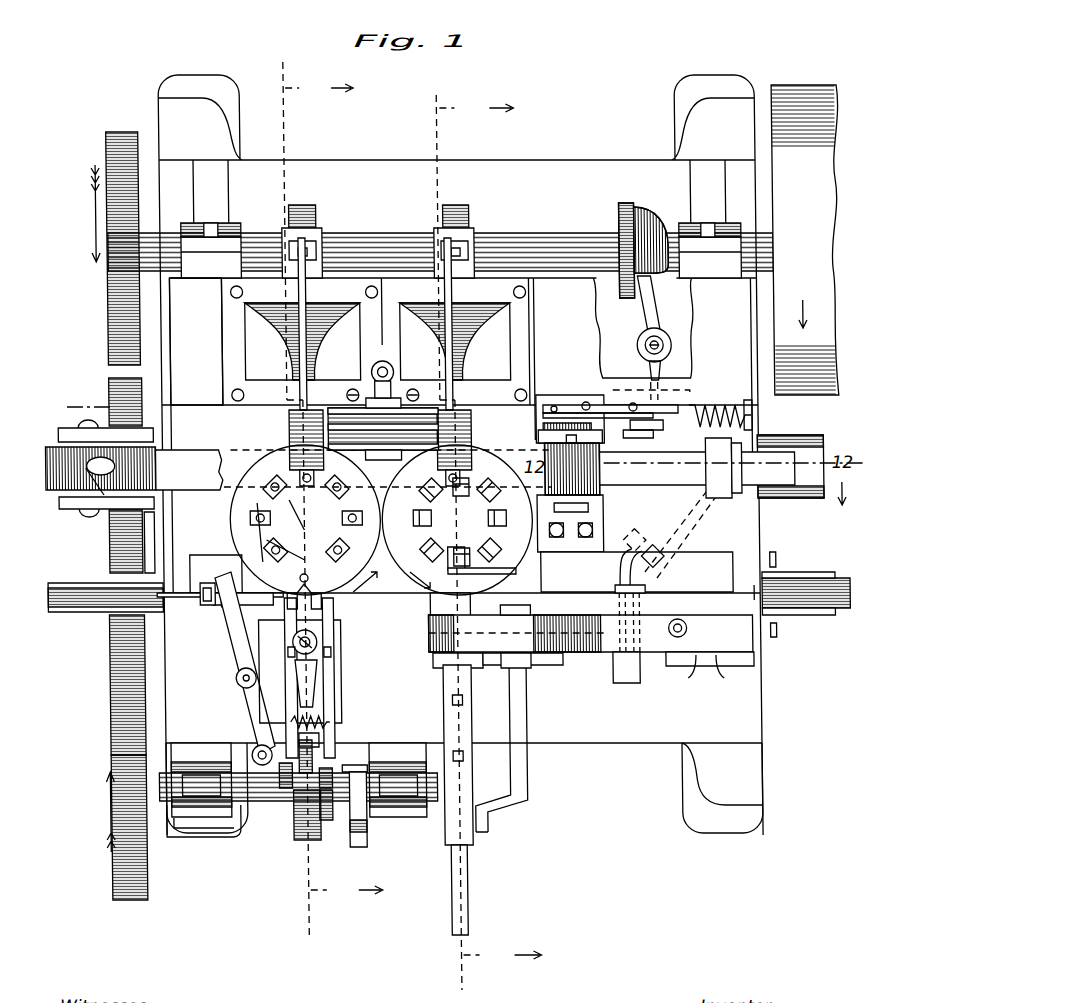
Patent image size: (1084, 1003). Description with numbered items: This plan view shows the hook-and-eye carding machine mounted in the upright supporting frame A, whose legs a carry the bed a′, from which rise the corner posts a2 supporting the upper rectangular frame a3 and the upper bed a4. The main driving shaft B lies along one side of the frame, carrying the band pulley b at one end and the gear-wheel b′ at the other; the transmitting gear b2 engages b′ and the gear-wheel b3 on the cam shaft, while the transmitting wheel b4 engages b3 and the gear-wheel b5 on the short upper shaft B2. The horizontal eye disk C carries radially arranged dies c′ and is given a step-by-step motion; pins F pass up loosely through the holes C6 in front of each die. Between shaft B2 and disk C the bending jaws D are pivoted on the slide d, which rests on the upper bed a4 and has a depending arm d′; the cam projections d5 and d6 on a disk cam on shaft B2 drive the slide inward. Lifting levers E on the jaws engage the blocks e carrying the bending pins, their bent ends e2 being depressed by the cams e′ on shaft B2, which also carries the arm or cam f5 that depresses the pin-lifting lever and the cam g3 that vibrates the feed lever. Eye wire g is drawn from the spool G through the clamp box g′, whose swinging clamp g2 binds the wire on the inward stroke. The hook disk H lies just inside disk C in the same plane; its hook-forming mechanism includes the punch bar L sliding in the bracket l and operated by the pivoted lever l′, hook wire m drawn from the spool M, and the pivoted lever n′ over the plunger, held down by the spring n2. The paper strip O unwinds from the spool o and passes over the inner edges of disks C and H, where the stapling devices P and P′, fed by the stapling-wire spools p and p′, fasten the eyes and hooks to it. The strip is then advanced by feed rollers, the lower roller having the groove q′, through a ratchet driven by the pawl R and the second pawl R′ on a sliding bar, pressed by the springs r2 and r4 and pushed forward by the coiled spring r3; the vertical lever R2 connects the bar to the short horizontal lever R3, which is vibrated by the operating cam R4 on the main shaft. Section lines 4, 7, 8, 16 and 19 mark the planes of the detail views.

The supporting frame A is at (605, 158).
The legs a is at (240, 848).
The bed a′ is at (462, 436).
The corner posts a2 is at (222, 235).
The upper rectangular frame a3 is at (204, 848).
The upper bed a4 is at (298, 718).
The main driving shaft B is at (568, 243).
The short shaft B2 is at (174, 838).
The band driving pulley b is at (798, 240).
The gear-wheel b′ is at (108, 292).
The transmitting gear b2 is at (106, 385).
The gear-wheel b3 is at (106, 542).
The transmitting wheel b4 is at (104, 660).
The gear-wheel b5 is at (104, 728).
The horizontal disk C is at (305, 520).
The dies c′ is at (292, 514).
The holes C6 is at (274, 546).
The bending jaws D is at (280, 638).
The slide d is at (283, 662).
The arm d′ is at (232, 706).
The cam projection d5 is at (275, 805).
The cam projection d6 is at (298, 842).
The lifting levers E is at (330, 722).
The blocks e is at (317, 599).
The cams e′ is at (279, 830).
The outer bent ends e2 is at (325, 830).
The pins F is at (258, 562).
The arm or cam f5 is at (358, 838).
The spool of wire G is at (85, 610).
The wire g is at (200, 606).
The clamp box g′ is at (208, 583).
The swinging clamp g2 is at (215, 626).
The cam g3 is at (257, 766).
The disk H is at (457, 520).
The punch bar L is at (462, 850).
The bracket l is at (442, 830).
The pivoted lever l′ is at (498, 804).
The spool of wire M is at (808, 614).
The wire m is at (752, 593).
The pivoted lever n′ is at (603, 613).
The spring n2 is at (684, 630).
The paper strip O is at (454, 468).
The spool o is at (75, 497).
The wire stapling device P is at (320, 390).
The stapling device P′ is at (440, 378).
The spool of stapling wire p is at (393, 442).
The spool of stapling wire p′ is at (378, 360).
The groove q′ is at (533, 416).
The pawl R is at (556, 405).
The second pawl R′ is at (550, 405).
The vertical lever R2 is at (632, 438).
The short horizontal lever R3 is at (652, 314).
The operating cam R4 is at (660, 193).
The spring r2 is at (623, 404).
The coiled spring r3 is at (718, 403).
The spring r4 is at (585, 402).
The section line 4 is at (294, 497).
The section line 7 is at (445, 533).
The section line 8 is at (81, 407).
The section line 16 is at (334, 491).
The section line 19 is at (490, 533).